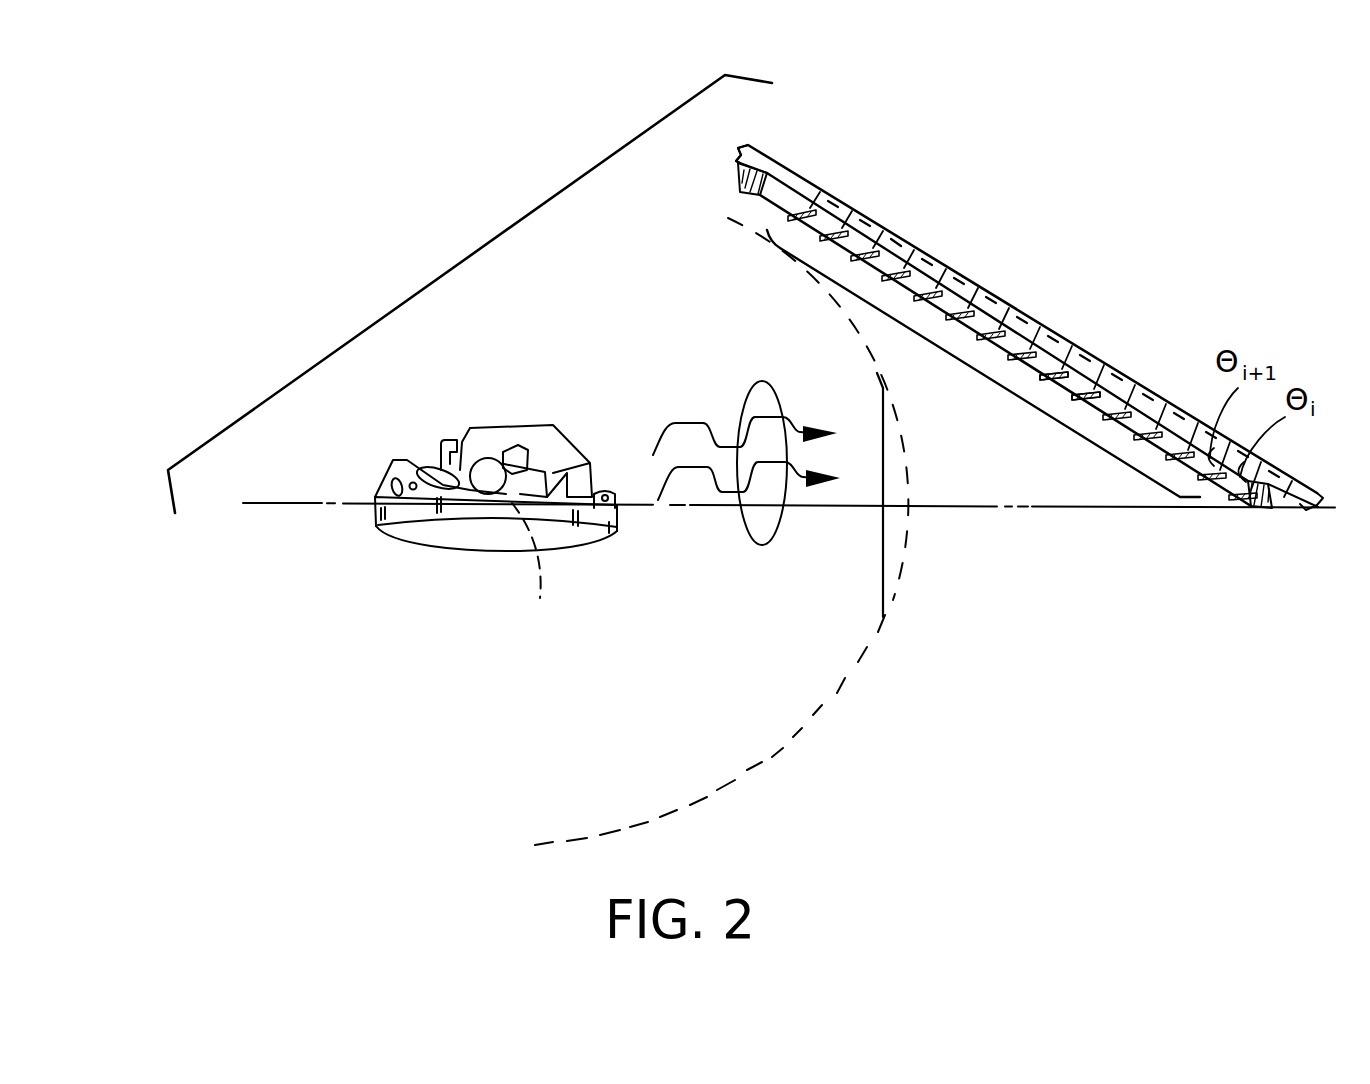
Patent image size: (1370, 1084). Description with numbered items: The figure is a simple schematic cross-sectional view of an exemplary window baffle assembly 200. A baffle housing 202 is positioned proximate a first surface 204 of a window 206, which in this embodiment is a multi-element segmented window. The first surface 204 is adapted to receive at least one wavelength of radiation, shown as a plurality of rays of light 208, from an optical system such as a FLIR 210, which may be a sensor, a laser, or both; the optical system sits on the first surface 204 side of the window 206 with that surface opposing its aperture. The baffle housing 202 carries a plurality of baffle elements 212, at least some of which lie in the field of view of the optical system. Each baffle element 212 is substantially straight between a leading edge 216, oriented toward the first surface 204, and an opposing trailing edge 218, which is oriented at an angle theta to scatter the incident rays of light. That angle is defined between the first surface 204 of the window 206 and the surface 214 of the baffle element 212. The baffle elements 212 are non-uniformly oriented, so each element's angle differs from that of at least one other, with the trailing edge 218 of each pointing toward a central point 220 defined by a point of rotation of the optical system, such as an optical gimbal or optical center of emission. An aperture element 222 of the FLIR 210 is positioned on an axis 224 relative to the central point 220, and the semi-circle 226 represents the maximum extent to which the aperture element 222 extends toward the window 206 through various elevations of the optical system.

The window baffle assembly 200 is at (445, 272).
The baffle housing 202 is at (747, 195).
The first surface 204 is at (738, 162).
The window 206 is at (993, 297).
The rays of light 208 is at (783, 517).
The FLIR 210 is at (460, 557).
The baffle elements 212 is at (962, 360).
The surface of the baffle element 214 is at (1063, 377).
The leading edge 216 is at (870, 227).
The trailing edge 218 is at (833, 253).
The central point 220 is at (539, 575).
The aperture element 222 is at (882, 580).
The axis 224 is at (297, 503).
The semi-circle 226 is at (773, 752).